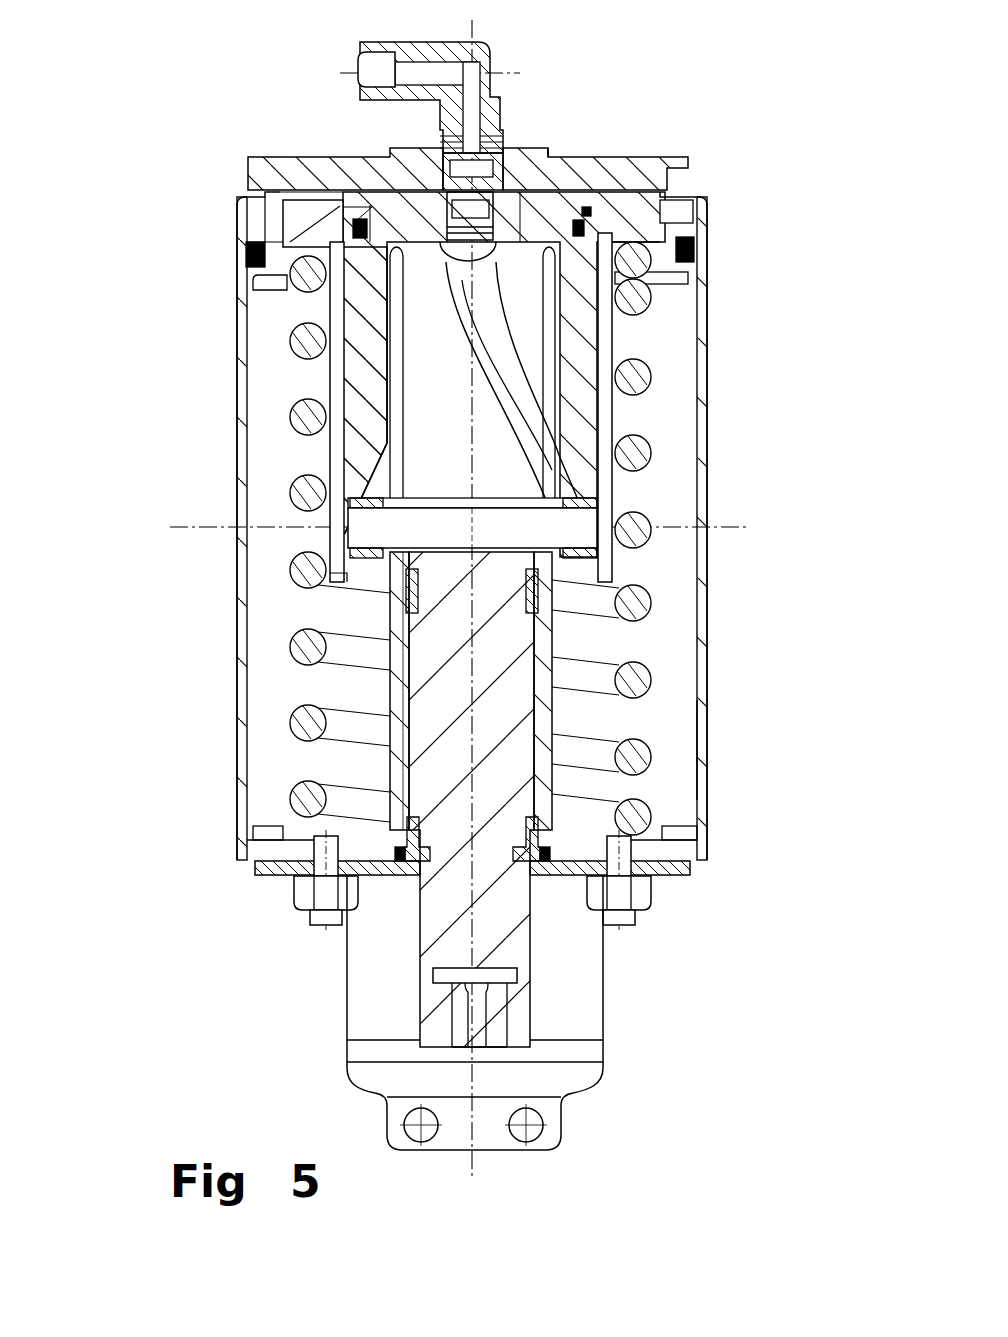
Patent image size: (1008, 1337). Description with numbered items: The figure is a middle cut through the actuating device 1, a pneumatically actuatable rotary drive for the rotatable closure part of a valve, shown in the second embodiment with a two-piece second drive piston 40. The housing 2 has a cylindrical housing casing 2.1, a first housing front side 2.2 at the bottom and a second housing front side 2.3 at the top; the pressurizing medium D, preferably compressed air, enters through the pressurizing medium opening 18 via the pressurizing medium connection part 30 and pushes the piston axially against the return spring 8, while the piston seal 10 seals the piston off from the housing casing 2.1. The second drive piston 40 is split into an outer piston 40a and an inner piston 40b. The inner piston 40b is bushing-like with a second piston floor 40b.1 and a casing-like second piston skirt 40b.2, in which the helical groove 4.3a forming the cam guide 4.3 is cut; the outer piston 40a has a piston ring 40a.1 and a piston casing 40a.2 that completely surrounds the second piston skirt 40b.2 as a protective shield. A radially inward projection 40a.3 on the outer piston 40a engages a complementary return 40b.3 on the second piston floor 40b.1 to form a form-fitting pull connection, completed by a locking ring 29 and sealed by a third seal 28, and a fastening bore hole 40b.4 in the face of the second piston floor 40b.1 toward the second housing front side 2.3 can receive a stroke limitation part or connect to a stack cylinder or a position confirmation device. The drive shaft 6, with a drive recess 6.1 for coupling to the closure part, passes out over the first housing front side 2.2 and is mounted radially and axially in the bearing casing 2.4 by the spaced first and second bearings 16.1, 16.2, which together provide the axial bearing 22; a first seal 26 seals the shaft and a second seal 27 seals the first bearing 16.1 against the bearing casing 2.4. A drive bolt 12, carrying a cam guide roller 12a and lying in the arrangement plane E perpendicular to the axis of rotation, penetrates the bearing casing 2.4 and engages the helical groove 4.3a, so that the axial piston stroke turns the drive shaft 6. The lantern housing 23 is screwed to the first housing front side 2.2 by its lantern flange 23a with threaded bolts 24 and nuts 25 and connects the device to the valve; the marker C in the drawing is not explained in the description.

The actuating device 1 is at (200, 1084).
The housing 2 is at (735, 655).
The housing casing 2.1 is at (704, 750).
The first housing front side 2.2 is at (677, 848).
The second housing front side 2.3 is at (347, 167).
The bearing casing 2.4 is at (545, 710).
The cam guide 4.3 is at (478, 285).
The helical groove 4.3a is at (492, 388).
The drive shaft 6 is at (447, 1018).
The drive recess 6.1 is at (443, 1040).
The return spring 8 is at (307, 650).
The piston seal 10 is at (690, 243).
The drive bolt 12 is at (525, 518).
The cam guide roller 12a is at (344, 584).
The first bearing 16.1 is at (412, 826).
The second bearing 16.2 is at (408, 590).
The pressurizing medium opening 18 is at (584, 211).
The axial bearing 22 is at (493, 920).
The lantern housing 23 is at (302, 1006).
The lantern flange 23a is at (283, 868).
The threaded bolts 24 is at (330, 895).
The nuts 25 is at (307, 916).
The first seal 26 is at (655, 908).
The second seal 27 is at (552, 855).
The third seal 28 is at (586, 229).
The locking ring 29 is at (550, 155).
The pressurizing medium connection part 30 is at (521, 221).
The second drive piston 40 is at (262, 298).
The outer piston 40a is at (261, 257).
The piston ring 40a.1 is at (627, 224).
The piston casing 40a.2 is at (336, 466).
The projection 40a.3 is at (300, 205).
The inner piston 40b is at (345, 370).
The second piston floor 40b.1 is at (522, 221).
The second piston skirt 40b.2 is at (362, 413).
The return 40b.3 is at (352, 215).
The fastening bore hole 40b.4 is at (383, 222).
The section marker C is at (178, 492).
The pressurizing medium D is at (740, 482).
The arrangement plane E is at (494, 527).